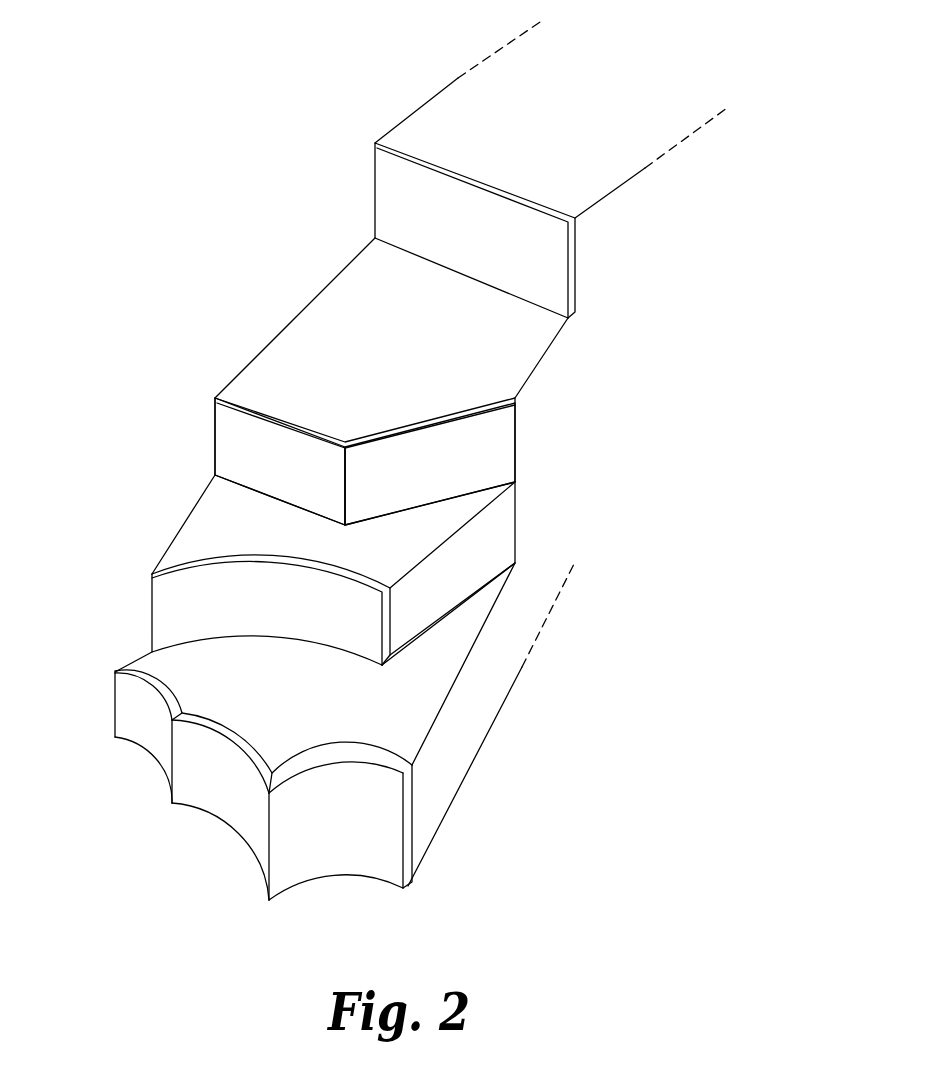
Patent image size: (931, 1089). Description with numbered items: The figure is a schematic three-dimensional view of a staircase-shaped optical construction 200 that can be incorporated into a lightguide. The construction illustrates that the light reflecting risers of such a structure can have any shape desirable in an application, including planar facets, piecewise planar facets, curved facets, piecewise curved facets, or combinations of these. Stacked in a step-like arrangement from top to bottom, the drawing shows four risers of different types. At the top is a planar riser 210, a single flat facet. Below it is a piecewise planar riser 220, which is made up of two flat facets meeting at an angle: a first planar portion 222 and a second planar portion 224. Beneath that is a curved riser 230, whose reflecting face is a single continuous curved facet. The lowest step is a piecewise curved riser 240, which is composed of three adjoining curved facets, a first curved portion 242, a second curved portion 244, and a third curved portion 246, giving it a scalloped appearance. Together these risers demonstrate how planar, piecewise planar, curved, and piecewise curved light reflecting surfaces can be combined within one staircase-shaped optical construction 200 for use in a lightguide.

The optical construction 200 is at (692, 54).
The planar riser 210 is at (385, 183).
The piecewise planar riser 220 is at (217, 428).
The first planar portion 222 is at (225, 445).
The second planar portion 224 is at (503, 446).
The curved riser 230 is at (163, 596).
The piecewise curved riser 240 is at (123, 692).
The first curved portion 242 is at (143, 733).
The second curved portion 244 is at (227, 812).
The third curved portion 246 is at (342, 863).